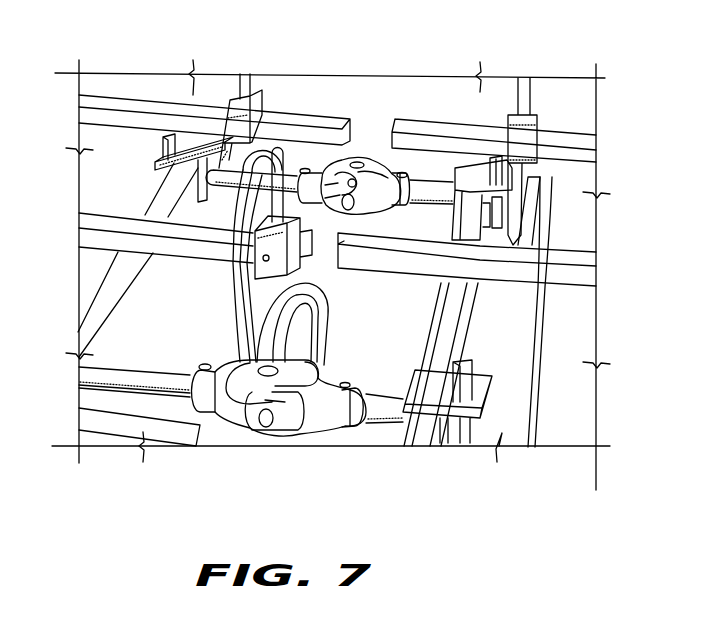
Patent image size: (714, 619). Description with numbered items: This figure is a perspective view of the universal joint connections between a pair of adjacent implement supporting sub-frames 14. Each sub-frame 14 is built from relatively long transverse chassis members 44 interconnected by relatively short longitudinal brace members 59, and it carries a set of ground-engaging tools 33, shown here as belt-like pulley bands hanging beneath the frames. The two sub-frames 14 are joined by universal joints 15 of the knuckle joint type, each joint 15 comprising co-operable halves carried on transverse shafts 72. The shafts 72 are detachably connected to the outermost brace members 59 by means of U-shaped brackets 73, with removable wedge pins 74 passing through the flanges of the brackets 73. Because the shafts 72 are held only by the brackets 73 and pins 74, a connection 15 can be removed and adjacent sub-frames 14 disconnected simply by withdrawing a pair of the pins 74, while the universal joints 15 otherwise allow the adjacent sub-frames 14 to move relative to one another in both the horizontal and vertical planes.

The implement supporting sub-frame 14 is at (146, 95).
The universal joint 15 is at (352, 160).
The ground-engaging tool 33 is at (240, 326).
The chassis member 44 is at (281, 102).
The longitudinal brace member 59 is at (162, 207).
The transverse shaft 72 is at (437, 192).
The U-shaped bracket 73 is at (486, 186).
The removable wedge pin 74 is at (163, 141).